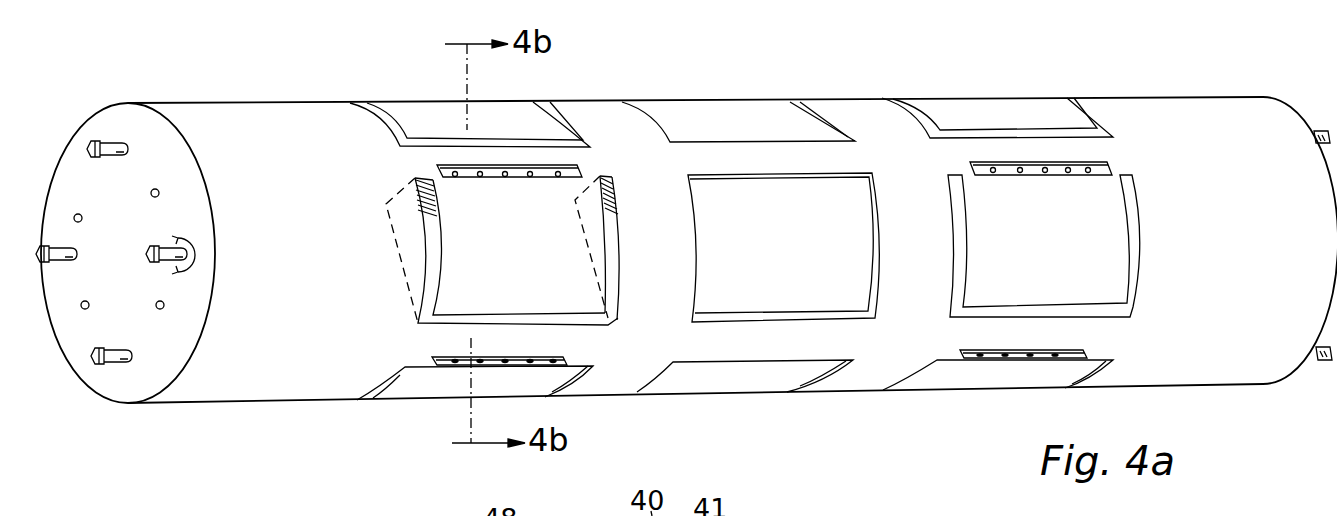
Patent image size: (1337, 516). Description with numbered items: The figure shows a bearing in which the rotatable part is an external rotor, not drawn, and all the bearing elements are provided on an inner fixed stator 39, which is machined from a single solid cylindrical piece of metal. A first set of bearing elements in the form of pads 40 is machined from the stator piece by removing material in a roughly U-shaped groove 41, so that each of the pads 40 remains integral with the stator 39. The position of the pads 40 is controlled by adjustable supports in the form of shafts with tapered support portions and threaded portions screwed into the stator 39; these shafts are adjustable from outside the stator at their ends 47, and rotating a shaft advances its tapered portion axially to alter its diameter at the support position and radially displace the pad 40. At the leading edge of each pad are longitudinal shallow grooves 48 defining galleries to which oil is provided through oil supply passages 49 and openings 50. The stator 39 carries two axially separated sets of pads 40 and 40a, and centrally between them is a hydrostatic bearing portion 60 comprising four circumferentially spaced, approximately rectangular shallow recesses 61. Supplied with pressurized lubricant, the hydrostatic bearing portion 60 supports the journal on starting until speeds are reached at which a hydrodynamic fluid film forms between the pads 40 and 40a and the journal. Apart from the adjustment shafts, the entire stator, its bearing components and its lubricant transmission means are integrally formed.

The stator 39 is at (1200, 133).
The pads 40 is at (537, 271).
The pads 40a is at (1068, 262).
The U-shaped groove 41 is at (450, 320).
The ends 47 is at (105, 364).
The shallow grooves 48 is at (580, 170).
The oil supply passages 49 is at (75, 218).
The openings 50 is at (454, 170).
The hydrostatic bearing portion 60 is at (722, 99).
The shallow recesses 61 is at (803, 260).